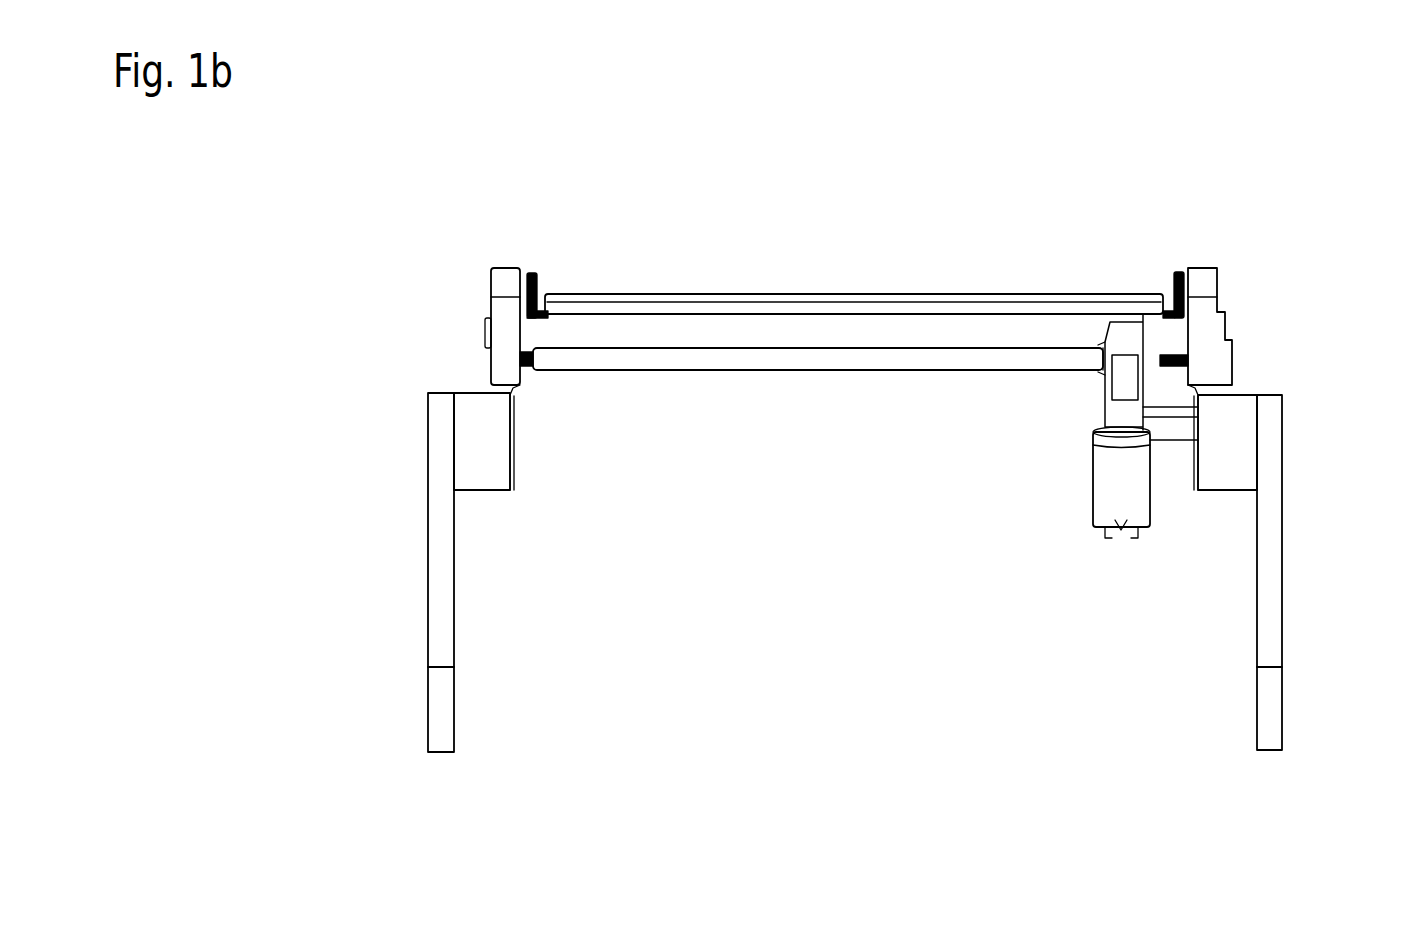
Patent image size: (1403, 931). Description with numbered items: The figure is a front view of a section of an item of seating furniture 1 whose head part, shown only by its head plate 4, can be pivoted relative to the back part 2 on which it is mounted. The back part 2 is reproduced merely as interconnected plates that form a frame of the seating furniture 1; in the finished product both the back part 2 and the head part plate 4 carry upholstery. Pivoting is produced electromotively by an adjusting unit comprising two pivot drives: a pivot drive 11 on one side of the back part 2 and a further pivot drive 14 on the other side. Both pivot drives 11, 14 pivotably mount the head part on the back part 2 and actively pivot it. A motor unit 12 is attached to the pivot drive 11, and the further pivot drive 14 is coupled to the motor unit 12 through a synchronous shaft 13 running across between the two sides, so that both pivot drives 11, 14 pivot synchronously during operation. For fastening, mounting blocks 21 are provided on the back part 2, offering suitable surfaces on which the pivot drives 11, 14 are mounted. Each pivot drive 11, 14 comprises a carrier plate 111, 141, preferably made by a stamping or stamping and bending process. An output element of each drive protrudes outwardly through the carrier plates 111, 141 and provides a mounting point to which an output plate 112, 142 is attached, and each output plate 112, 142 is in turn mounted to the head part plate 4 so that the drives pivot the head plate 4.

The seating furniture 1 is at (632, 728).
The back part 2 is at (442, 612).
The head plate 4 is at (818, 305).
The pivot drive 11 is at (1208, 362).
The motor unit 12 is at (1082, 463).
The synchronous shaft 13 is at (901, 355).
The further pivot drive 14 is at (504, 327).
The mounting blocks 21 is at (487, 467).
The carrier plate 111 is at (1164, 499).
The output plate 112 is at (1178, 272).
The carrier plate 141 is at (513, 438).
The output plate 142 is at (528, 273).